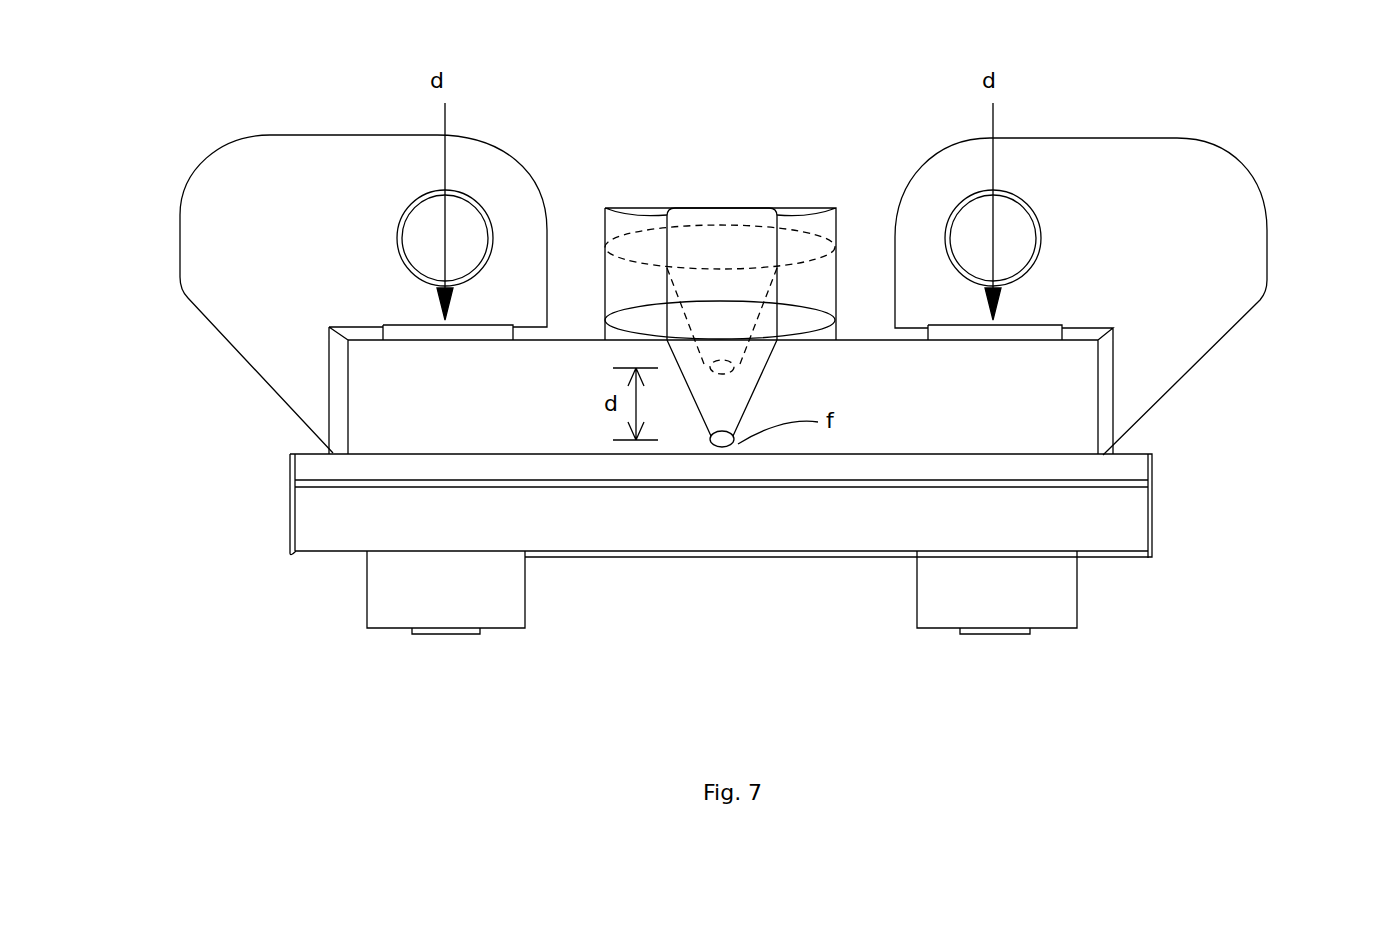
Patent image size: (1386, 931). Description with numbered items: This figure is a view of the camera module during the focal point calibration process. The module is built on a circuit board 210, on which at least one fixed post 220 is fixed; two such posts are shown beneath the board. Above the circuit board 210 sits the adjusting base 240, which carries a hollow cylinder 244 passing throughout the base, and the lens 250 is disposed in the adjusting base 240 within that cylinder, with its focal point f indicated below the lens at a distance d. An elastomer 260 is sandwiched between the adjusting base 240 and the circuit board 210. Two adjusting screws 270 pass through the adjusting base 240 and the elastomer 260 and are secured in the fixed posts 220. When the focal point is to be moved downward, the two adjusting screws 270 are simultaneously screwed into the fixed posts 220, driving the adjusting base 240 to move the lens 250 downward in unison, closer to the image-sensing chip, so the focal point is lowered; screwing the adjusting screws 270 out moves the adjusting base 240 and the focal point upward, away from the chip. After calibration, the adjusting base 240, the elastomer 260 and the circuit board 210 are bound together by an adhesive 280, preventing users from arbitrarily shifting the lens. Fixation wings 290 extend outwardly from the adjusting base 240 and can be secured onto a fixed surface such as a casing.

The circuit board 210 is at (1120, 523).
The fixed post 220 is at (527, 590).
The adjusting base 240 is at (1100, 398).
The hollow cylinder 244 is at (835, 210).
The lens 250 is at (720, 320).
The elastomer 260 is at (305, 455).
The adjusting screw 270 is at (1037, 323).
The adhesive 280 is at (290, 468).
The fixation wing 290 is at (1218, 213).